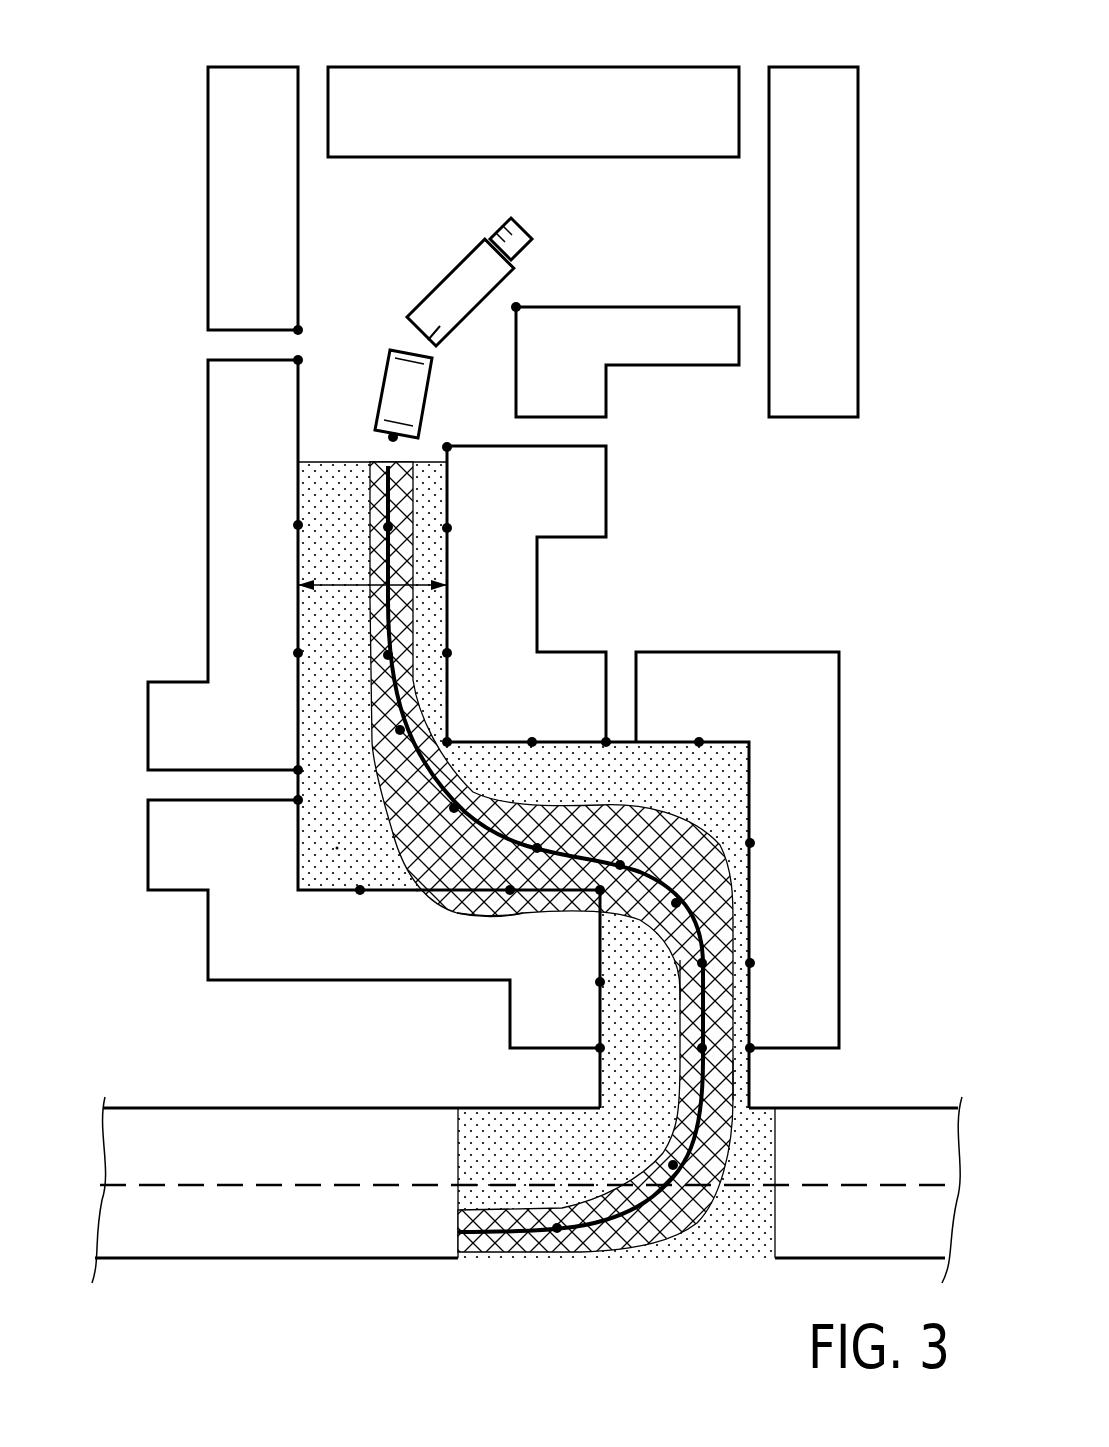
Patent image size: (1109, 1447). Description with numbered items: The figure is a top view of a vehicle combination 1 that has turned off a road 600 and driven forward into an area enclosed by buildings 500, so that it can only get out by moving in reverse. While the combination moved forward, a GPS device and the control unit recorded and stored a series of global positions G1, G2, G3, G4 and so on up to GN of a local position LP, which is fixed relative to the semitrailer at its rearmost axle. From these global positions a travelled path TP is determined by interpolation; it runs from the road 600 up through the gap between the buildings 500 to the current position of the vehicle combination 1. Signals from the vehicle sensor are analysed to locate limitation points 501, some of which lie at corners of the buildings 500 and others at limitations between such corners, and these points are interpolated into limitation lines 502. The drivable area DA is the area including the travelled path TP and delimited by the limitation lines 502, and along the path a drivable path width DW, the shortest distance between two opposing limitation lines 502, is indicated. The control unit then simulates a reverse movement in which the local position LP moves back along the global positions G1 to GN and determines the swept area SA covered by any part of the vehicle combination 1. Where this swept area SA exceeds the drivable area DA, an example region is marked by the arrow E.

The vehicle combination 1 is at (397, 240).
The buildings 500 is at (207, 208).
The limitation points 501 is at (298, 330).
The limitation lines 502 is at (298, 495).
The road 600 is at (318, 1215).
The local position LP is at (393, 437).
The drivable path width DW is at (340, 587).
The global position GN is at (388, 655).
The drivable area DA is at (337, 848).
The swept area SA is at (417, 890).
The arrow E is at (487, 932).
The travelled path TP is at (620, 1250).
The global position G1 is at (557, 1258).
The global position G2 is at (683, 1258).
The global position G3 is at (733, 1077).
The global position G4 is at (690, 985).